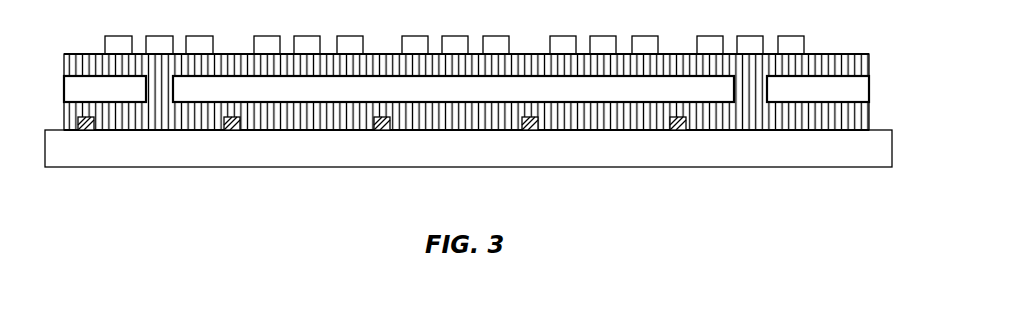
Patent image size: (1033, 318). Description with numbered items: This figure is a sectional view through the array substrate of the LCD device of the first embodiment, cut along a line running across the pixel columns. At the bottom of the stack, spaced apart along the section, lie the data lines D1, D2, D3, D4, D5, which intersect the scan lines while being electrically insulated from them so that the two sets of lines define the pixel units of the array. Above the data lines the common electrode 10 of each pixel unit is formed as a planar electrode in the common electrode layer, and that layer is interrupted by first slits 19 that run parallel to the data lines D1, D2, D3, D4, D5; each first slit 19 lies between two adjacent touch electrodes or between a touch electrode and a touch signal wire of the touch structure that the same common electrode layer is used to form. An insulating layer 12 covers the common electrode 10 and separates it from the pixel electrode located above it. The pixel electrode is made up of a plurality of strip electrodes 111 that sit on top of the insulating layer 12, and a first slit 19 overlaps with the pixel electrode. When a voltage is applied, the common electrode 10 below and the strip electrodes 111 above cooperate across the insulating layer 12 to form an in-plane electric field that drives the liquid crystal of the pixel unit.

The common electrode 10 is at (870, 88).
The insulating layer 12 is at (862, 67).
The first slit 19 is at (155, 92).
The strip electrode 111 is at (792, 36).
The data line D1 is at (86, 130).
The data line D2 is at (231, 130).
The data line D3 is at (377, 131).
The data line D4 is at (525, 131).
The data line D5 is at (676, 120).